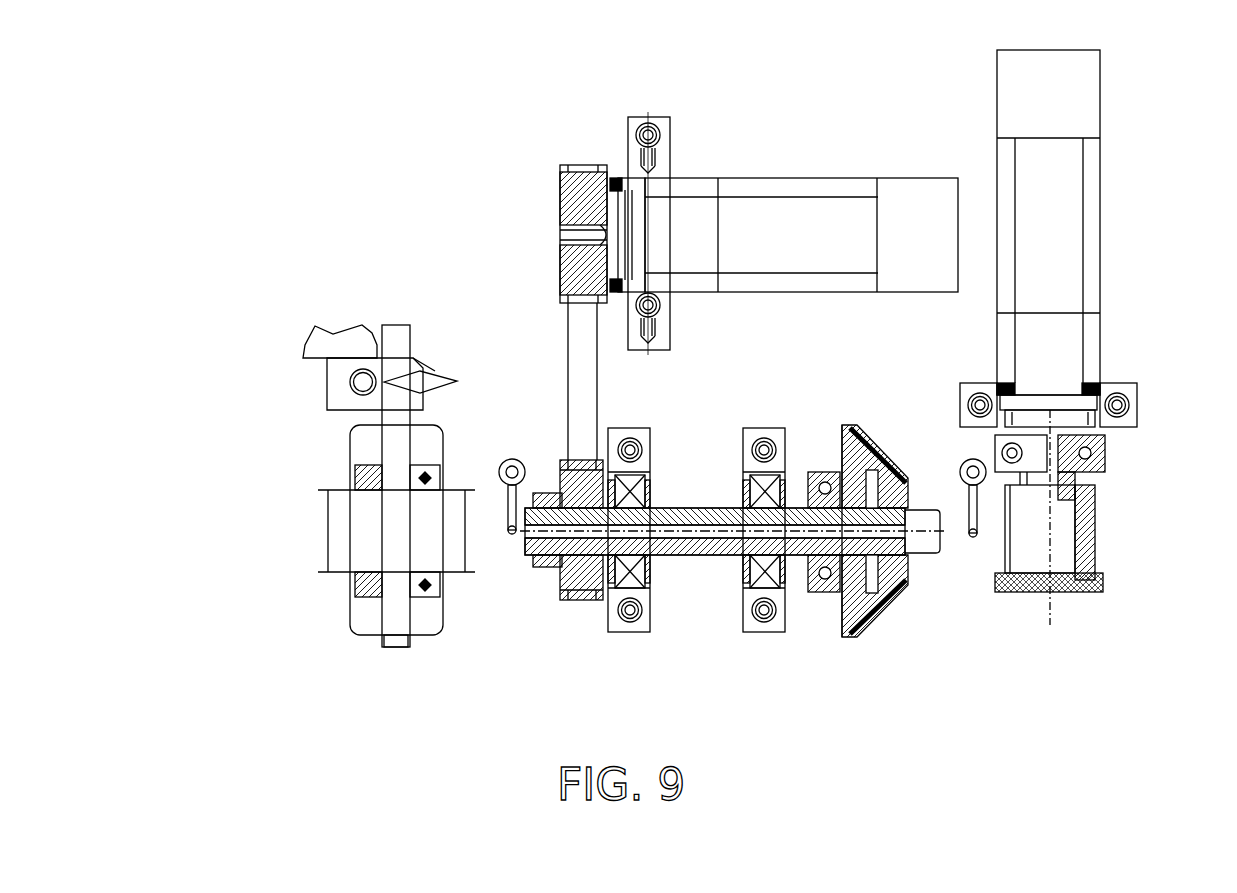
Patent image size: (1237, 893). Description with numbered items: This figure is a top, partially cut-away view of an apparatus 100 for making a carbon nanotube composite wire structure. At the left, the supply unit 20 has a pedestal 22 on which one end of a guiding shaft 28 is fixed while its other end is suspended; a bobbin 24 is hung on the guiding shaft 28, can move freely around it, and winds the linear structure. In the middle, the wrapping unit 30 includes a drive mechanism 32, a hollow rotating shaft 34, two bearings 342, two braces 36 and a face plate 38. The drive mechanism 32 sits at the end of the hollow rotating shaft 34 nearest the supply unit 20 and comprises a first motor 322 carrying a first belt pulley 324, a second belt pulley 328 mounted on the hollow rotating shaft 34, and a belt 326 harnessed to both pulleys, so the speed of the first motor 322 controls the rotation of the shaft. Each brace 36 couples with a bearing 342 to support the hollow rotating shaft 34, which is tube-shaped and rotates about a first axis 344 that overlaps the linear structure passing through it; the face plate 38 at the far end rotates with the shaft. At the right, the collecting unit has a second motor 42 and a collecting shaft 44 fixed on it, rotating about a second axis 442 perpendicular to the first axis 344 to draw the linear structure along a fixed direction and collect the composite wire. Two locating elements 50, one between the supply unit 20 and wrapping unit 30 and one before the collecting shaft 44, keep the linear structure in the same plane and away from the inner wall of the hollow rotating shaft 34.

The apparatus 100 is at (413, 83).
The supply unit 20 is at (248, 420).
The pedestal 22 is at (340, 392).
The bobbin 24 is at (328, 516).
The guiding shaft 28 is at (390, 613).
The wrapping unit 30 is at (570, 610).
The drive mechanism 32 is at (470, 117).
The first motor 322 is at (685, 212).
The first belt pulley 324 is at (563, 243).
The belt 326 is at (576, 337).
The second belt pulley 328 is at (578, 478).
The hollow rotating shaft 34 is at (838, 470).
The bearings 342 is at (727, 478).
The first axis 344 is at (893, 478).
The braces 36 is at (743, 618).
The face plate 38 is at (870, 625).
The second motor 42 is at (1075, 352).
The collecting shaft 44 is at (1025, 515).
The second axis 442 is at (1055, 535).
The locating elements 50 is at (510, 530).